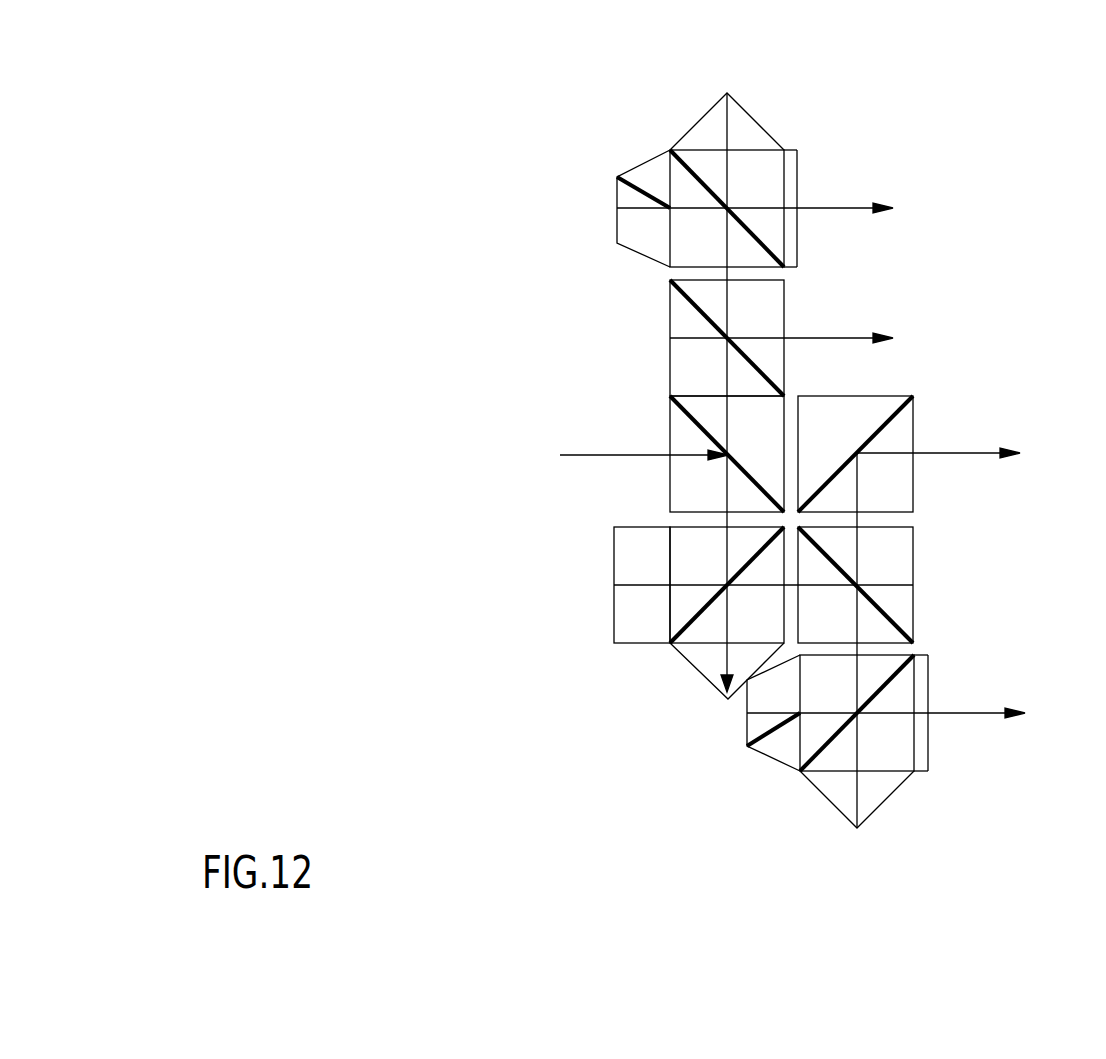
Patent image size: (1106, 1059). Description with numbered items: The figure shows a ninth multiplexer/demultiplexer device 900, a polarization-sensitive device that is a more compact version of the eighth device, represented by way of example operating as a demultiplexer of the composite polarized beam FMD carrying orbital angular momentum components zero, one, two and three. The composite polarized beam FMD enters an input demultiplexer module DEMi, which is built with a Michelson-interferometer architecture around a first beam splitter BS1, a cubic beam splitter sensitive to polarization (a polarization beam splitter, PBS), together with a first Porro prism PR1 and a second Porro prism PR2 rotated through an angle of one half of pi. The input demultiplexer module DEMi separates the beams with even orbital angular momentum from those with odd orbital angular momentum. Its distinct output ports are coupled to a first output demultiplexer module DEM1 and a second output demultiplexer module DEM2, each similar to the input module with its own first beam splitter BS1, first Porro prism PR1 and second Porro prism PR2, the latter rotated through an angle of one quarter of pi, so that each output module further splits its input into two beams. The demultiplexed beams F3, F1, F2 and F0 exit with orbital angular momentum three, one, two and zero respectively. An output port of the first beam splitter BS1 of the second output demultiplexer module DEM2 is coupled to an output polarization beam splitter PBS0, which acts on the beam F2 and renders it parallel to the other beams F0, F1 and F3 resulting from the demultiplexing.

The ninth multiplexer/demultiplexer device 900 is at (1015, 105).
The first output demultiplexer module DEM1 is at (615, 99).
The second output demultiplexer module DEM2 is at (983, 815).
The input demultiplexer module DEMi is at (625, 715).
The first Porro prism PR1 is at (755, 118).
The second Porro prism PR2 is at (617, 227).
The first beam splitter BS1 is at (670, 340).
The output polarization beam splitter PBS0 is at (913, 418).
The composite polarized beam FMD is at (618, 442).
The beam with orbital angular momentum l=0 F0 is at (904, 703).
The beam with orbital angular momentum l=1 F1 is at (800, 328).
The beam with orbital angular momentum l=2 F2 is at (958, 443).
The beam with orbital angular momentum l=3 F3 is at (773, 198).